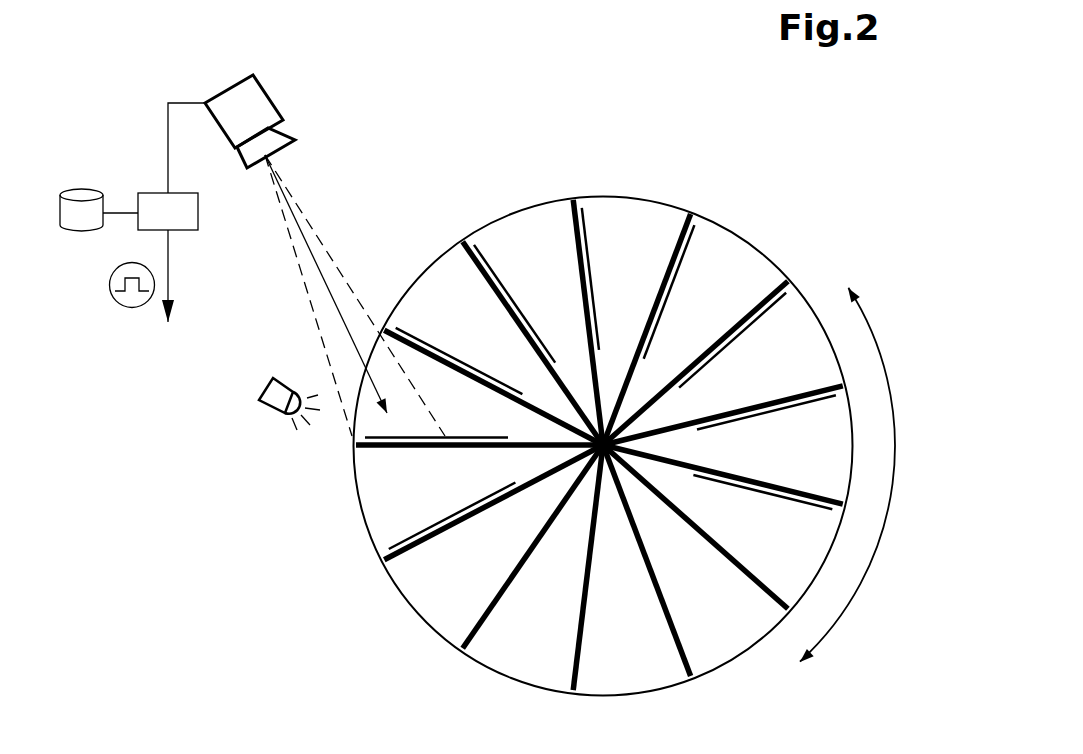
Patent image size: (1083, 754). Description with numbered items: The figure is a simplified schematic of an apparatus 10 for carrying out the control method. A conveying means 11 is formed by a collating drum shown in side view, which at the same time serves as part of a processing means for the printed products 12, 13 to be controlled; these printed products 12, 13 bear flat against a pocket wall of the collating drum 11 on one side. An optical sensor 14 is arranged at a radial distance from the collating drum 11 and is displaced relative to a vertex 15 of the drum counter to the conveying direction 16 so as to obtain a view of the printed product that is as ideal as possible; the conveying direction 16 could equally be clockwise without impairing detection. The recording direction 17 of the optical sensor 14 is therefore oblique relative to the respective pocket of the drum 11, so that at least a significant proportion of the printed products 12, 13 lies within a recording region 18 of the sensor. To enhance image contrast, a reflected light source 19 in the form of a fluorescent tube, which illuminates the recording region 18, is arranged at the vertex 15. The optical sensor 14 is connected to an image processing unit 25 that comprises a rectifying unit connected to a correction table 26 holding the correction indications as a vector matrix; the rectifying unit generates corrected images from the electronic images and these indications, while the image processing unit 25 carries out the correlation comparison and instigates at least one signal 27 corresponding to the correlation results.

The apparatus 10 is at (552, 416).
The conveying means 11 is at (428, 634).
The printed product 12 is at (490, 253).
The printed product 13 is at (597, 255).
The optical sensor 14 is at (233, 98).
The vertex 15 is at (347, 452).
The conveying direction 16 is at (863, 315).
The recording direction 17 is at (322, 268).
The recording region 18 is at (370, 430).
The reflected light source 19 is at (268, 397).
The image processing unit 25 is at (155, 198).
The correction table 26 is at (82, 193).
The signal 27 is at (108, 312).